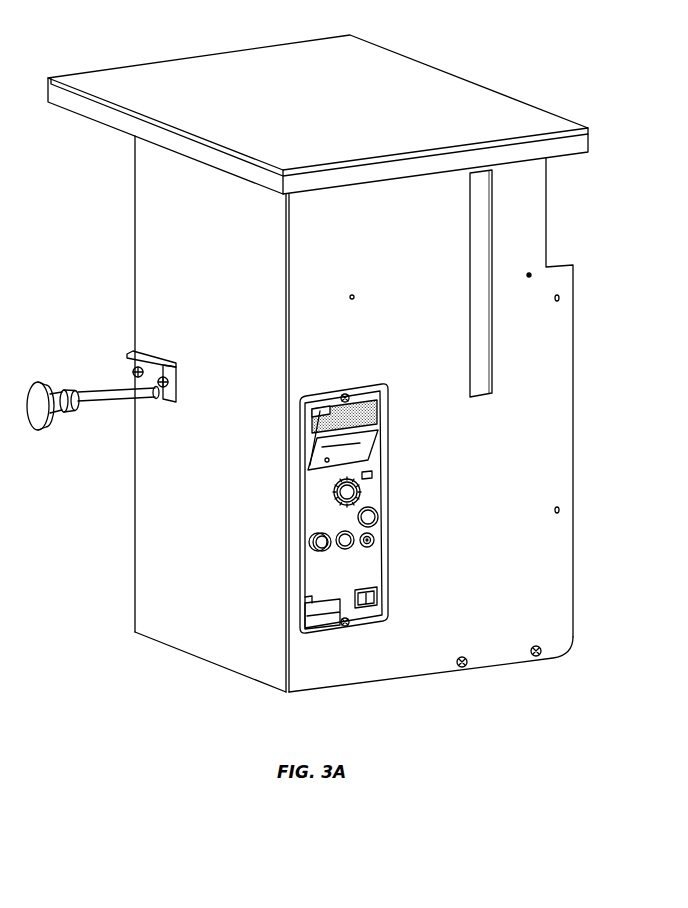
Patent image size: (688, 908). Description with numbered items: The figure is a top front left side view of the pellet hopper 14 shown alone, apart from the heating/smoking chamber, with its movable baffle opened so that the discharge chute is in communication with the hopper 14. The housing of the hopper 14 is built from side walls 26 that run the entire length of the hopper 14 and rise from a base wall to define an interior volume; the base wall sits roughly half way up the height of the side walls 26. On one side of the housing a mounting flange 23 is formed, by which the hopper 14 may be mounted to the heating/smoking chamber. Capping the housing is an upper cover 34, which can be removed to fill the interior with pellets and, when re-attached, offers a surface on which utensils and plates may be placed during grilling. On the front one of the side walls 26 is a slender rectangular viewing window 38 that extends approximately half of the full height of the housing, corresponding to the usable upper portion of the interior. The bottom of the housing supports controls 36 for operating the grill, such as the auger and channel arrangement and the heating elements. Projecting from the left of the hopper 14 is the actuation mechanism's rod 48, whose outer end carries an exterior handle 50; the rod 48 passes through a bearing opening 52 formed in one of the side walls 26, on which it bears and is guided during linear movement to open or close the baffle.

The hopper 14 is at (563, 95).
The mounting flange 23 is at (562, 397).
The side walls 26 is at (207, 648).
The upper cover 34 is at (382, 50).
The controls 36 is at (365, 483).
The viewing window 38 is at (492, 245).
The rod 48 is at (110, 402).
The exterior handle 50 is at (37, 413).
The bearing opening 52 is at (176, 402).